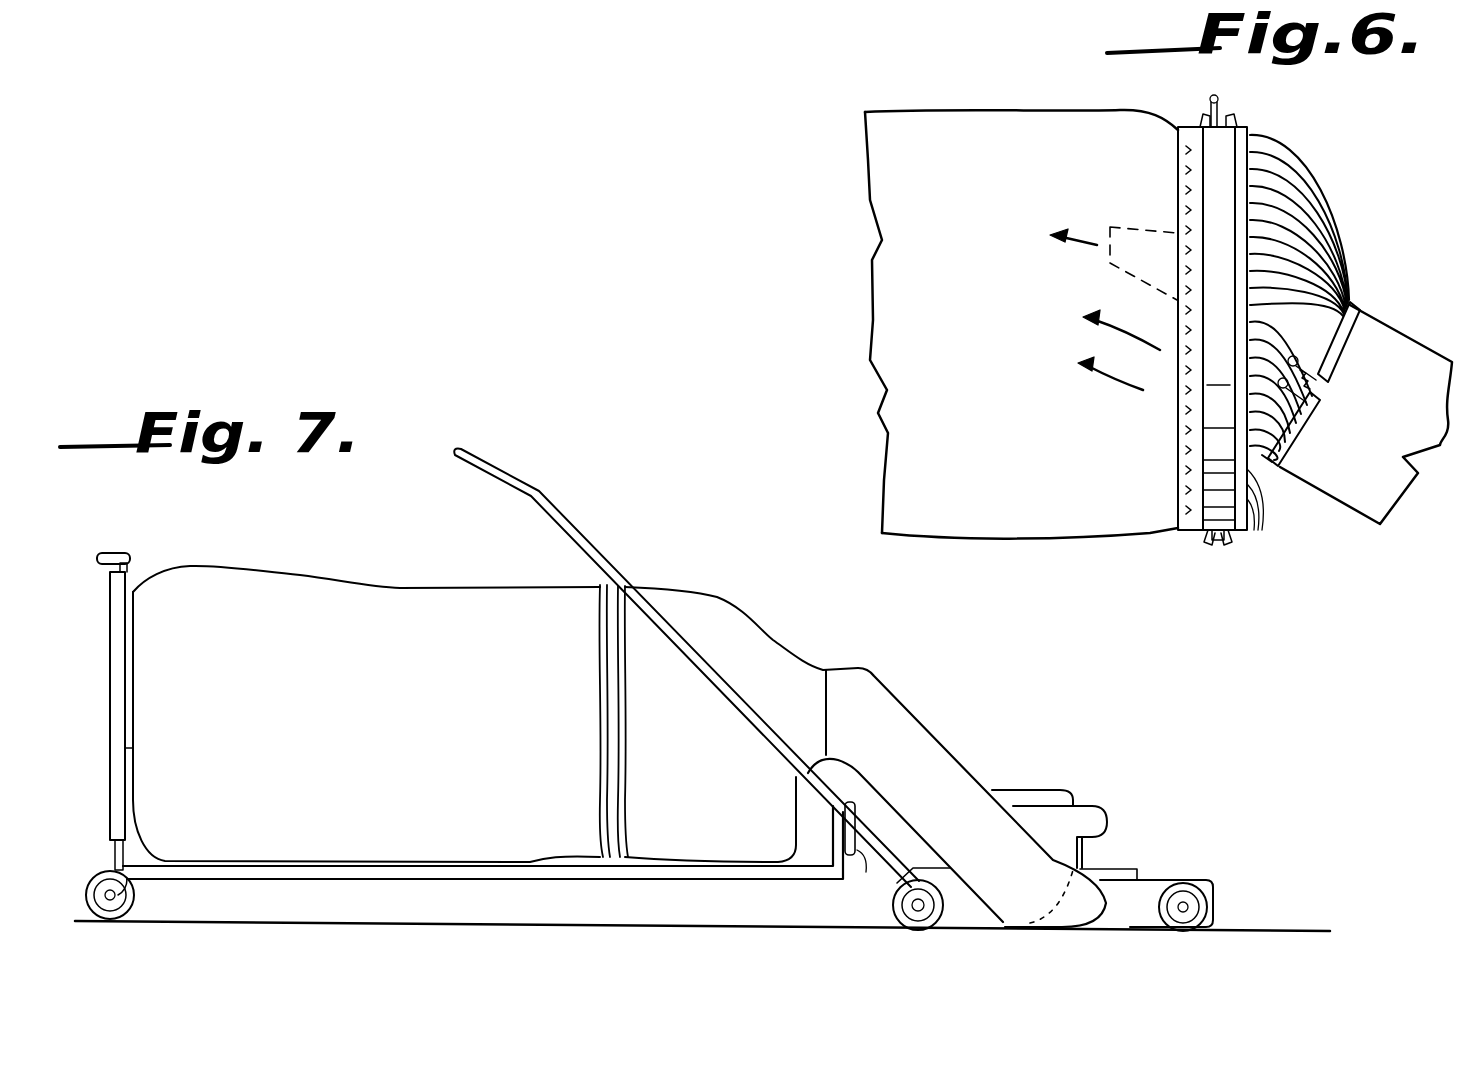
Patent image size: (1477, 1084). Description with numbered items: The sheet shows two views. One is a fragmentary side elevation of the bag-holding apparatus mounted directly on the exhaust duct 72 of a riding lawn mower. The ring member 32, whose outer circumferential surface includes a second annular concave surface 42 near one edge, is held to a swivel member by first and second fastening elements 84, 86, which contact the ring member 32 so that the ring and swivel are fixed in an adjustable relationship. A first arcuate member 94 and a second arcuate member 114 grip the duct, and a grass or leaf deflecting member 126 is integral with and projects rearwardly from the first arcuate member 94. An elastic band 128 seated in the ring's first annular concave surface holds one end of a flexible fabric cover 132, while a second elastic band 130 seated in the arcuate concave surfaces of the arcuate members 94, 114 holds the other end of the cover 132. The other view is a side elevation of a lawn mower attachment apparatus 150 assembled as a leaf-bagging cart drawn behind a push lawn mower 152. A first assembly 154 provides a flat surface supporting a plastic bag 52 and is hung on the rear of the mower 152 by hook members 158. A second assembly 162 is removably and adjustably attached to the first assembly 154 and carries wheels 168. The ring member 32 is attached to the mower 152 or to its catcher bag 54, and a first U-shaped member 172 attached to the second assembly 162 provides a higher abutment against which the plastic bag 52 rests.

In FIG. 6, the ring member 32 is at (1183, 418).
In FIG. 7, the ring member 32 is at (638, 613).
In FIG. 6, the second annular concave surface 42 is at (1180, 480).
In FIG. 6, the plastic bag 52 is at (1103, 123).
In FIG. 7, the plastic bag 52 is at (460, 570).
In FIG. 7, the lawn mower catcher bag 54 is at (760, 648).
In FIG. 6, the exhaust duct 72 is at (1380, 332).
In FIG. 6, the first fastening element 84 is at (1227, 118).
In FIG. 6, the second fastening element 86 is at (1235, 538).
In FIG. 6, the first arcuate member 94 is at (1330, 368).
In FIG. 6, the second arcuate member 114 is at (1289, 440).
In FIG. 6, the grass or leaf deflecting member 126 is at (1157, 218).
In FIG. 6, the elastic band 128 is at (1260, 137).
In FIG. 6, the second elastic band 130 is at (1352, 302).
In FIG. 6, the flexible cover 132 is at (1318, 200).
In FIG. 7, the lawn mower attachment apparatus 150 is at (427, 881).
In FIG. 7, the push lawn mower 152 is at (1137, 870).
In FIG. 7, the first assembly 154 is at (760, 875).
In FIG. 7, the hook member 158 is at (867, 852).
In FIG. 7, the second assembly 162 is at (122, 748).
In FIG. 7, the first wheel 168 is at (134, 893).
In FIG. 7, the first U-shaped member 172 is at (122, 628).